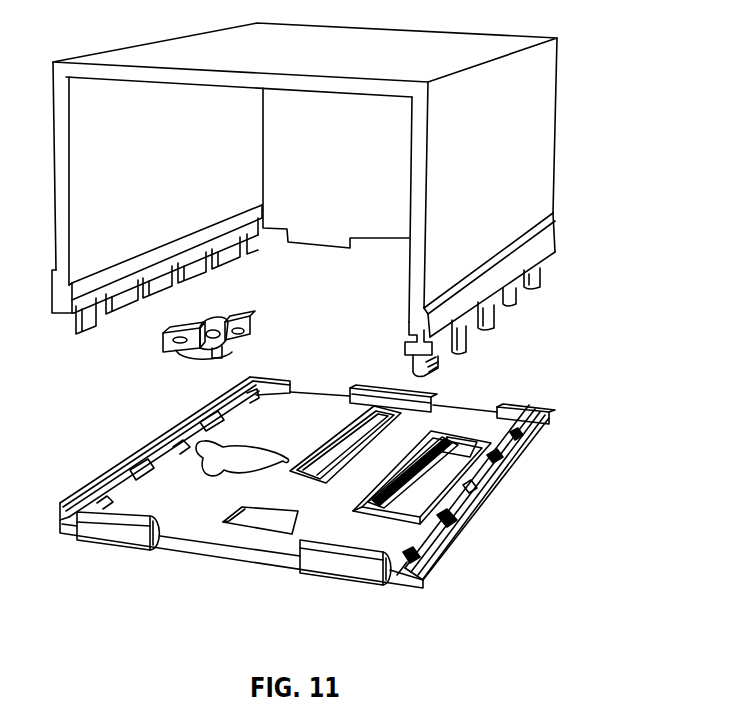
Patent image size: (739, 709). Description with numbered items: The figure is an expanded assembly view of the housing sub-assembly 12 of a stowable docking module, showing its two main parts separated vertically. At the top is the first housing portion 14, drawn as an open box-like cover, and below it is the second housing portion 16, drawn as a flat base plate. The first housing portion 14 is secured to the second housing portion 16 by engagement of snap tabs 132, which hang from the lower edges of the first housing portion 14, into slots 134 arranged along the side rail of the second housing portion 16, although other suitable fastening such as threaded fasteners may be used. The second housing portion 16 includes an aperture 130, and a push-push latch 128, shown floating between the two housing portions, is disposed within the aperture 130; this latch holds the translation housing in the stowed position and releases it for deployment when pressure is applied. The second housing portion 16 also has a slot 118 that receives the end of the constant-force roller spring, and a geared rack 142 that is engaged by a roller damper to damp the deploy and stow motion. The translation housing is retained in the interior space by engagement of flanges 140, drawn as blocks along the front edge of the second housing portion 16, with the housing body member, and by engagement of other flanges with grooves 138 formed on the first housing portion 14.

The housing sub-assembly 12 is at (570, 155).
The first housing portion 14 is at (555, 121).
The second housing portion 16 is at (458, 550).
The slot 118 is at (267, 521).
The push-push latch 128 is at (175, 353).
The aperture 130 is at (203, 449).
The snap tabs 132 is at (93, 327).
The slots 134 is at (497, 462).
The grooves 138 is at (410, 335).
The flanges 140 is at (122, 537).
The geared rack 142 is at (428, 470).